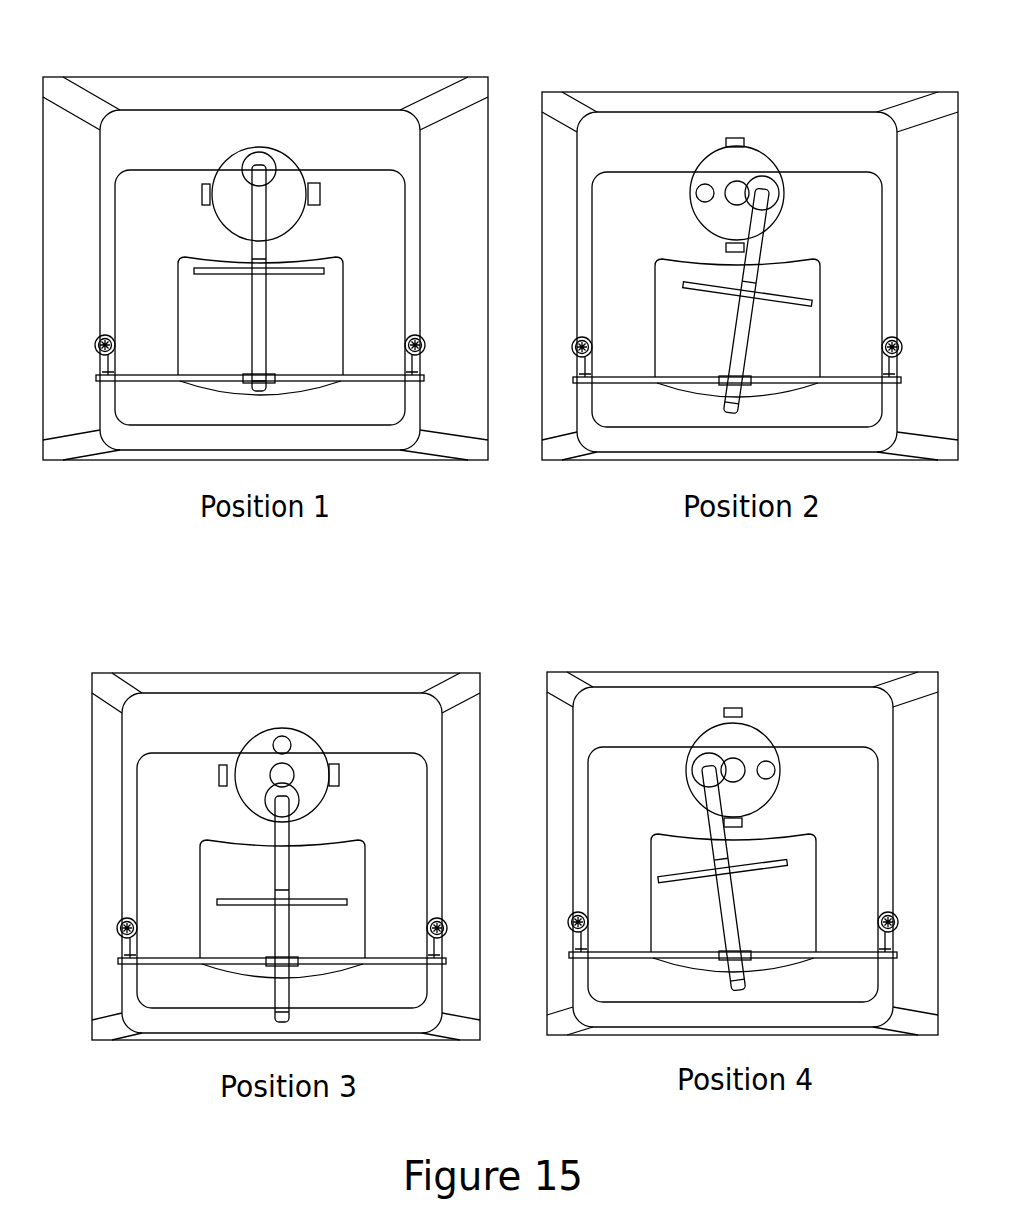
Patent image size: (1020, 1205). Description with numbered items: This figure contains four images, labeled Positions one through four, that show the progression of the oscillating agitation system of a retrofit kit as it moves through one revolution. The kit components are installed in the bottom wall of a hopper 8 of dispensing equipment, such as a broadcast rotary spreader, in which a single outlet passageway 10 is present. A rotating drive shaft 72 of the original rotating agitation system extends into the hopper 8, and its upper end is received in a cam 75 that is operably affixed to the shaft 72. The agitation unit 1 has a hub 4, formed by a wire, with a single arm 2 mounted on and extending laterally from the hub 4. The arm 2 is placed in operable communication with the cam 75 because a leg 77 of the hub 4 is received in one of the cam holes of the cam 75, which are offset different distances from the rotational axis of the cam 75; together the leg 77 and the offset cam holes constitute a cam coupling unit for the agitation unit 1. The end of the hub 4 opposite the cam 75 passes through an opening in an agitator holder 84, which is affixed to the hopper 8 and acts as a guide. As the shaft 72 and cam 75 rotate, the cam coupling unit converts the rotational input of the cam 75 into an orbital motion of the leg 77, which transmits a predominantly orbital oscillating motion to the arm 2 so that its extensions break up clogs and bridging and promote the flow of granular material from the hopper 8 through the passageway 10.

The agitation unit 1 is at (330, 246).
The arm 2 is at (224, 271).
The hub 4 is at (258, 213).
The hopper 8 is at (355, 414).
The outlet passageway 10 is at (343, 330).
The rotating drive shaft 72 is at (728, 189).
The cam 75 is at (287, 150).
The leg 77 is at (258, 166).
The agitator holder 84 is at (137, 378).